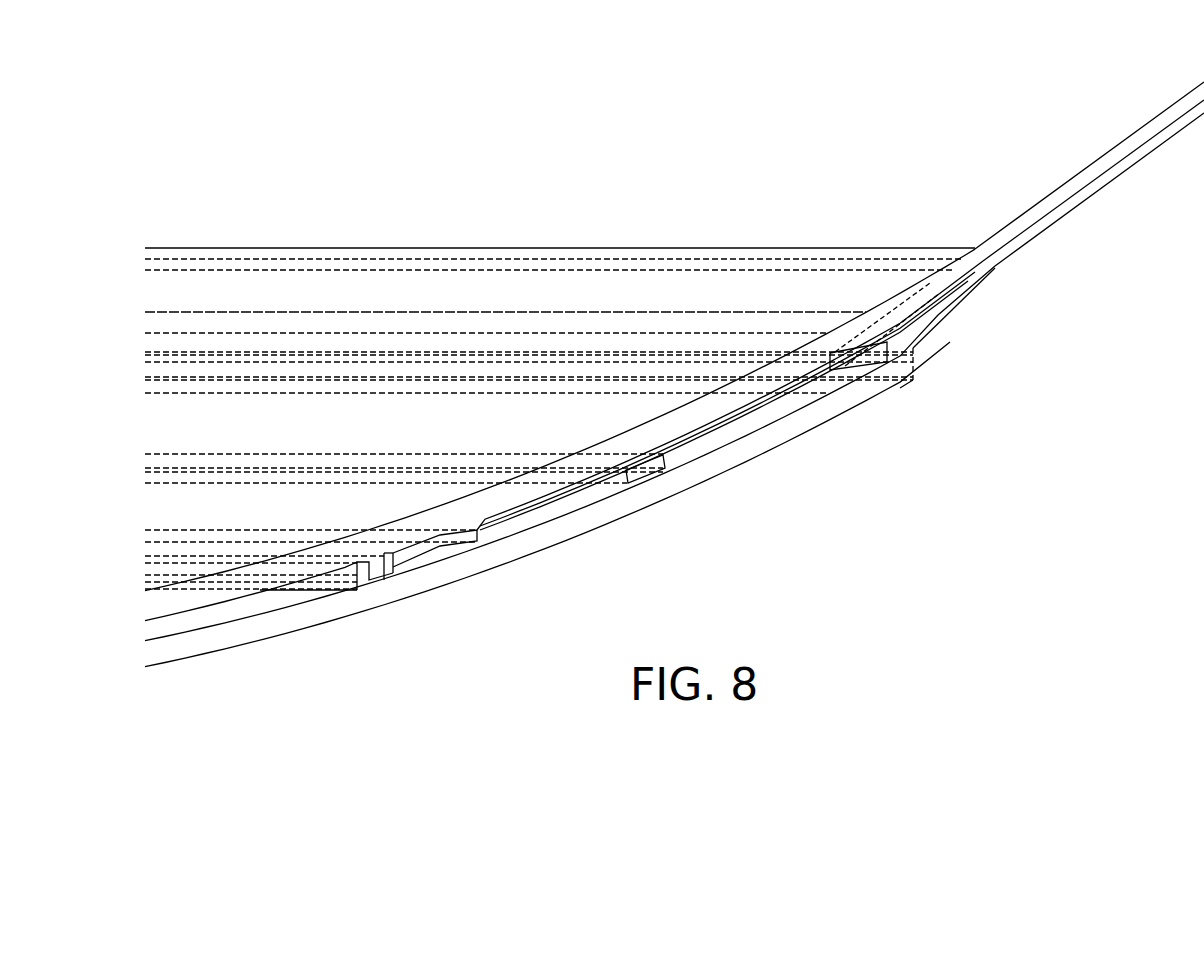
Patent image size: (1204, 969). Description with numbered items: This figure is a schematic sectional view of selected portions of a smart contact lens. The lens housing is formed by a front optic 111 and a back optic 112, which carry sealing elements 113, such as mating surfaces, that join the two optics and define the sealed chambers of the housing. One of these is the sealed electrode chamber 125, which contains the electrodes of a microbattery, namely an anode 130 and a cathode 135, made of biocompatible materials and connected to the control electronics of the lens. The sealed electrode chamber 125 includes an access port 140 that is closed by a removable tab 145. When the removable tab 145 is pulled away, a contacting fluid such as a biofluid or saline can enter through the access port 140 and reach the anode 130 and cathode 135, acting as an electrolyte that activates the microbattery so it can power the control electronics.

The front optic 111 is at (846, 415).
The back optic 112 is at (795, 340).
The sealing elements 113 is at (385, 596).
The sealed electrode chamber 125 is at (788, 377).
The anode 130 is at (727, 448).
The cathode 135 is at (556, 526).
The access port 140 is at (941, 312).
The removable tab 145 is at (1059, 160).